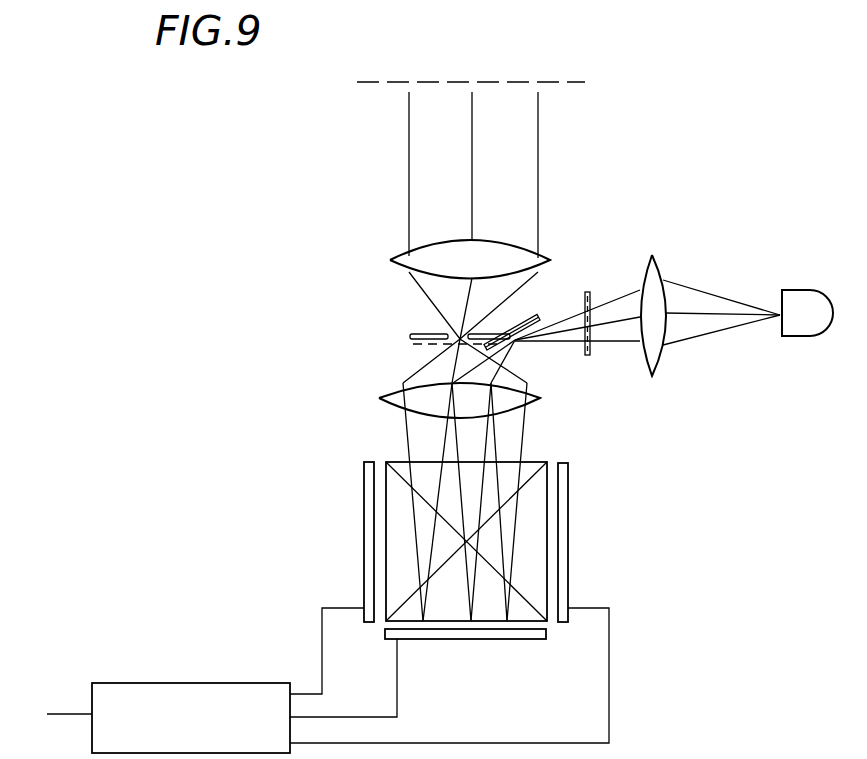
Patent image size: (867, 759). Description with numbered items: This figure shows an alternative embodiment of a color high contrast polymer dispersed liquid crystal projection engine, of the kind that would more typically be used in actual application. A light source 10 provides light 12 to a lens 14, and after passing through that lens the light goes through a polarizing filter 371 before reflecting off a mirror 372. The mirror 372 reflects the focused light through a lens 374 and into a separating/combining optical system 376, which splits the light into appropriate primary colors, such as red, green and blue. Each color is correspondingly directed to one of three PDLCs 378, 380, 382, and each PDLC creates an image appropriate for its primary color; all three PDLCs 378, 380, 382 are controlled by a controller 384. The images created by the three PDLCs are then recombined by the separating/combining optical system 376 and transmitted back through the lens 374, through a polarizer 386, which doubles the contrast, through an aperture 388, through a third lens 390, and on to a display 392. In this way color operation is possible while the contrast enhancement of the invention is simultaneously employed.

The light source 10 is at (813, 336).
The light 12 is at (714, 334).
The lens 14 is at (657, 268).
The polarizing filter 371 is at (590, 355).
The mirror 372 is at (540, 316).
The lens 374 is at (540, 398).
The separating/combining optical system 376 is at (546, 465).
The PDLC 378 is at (568, 500).
The PDLC 380 is at (490, 640).
The PDLC 382 is at (364, 513).
The controller 384 is at (198, 683).
The polarizer 386 is at (413, 348).
The aperture 388 is at (417, 333).
The third lens 390 is at (548, 258).
The display 392 is at (580, 83).